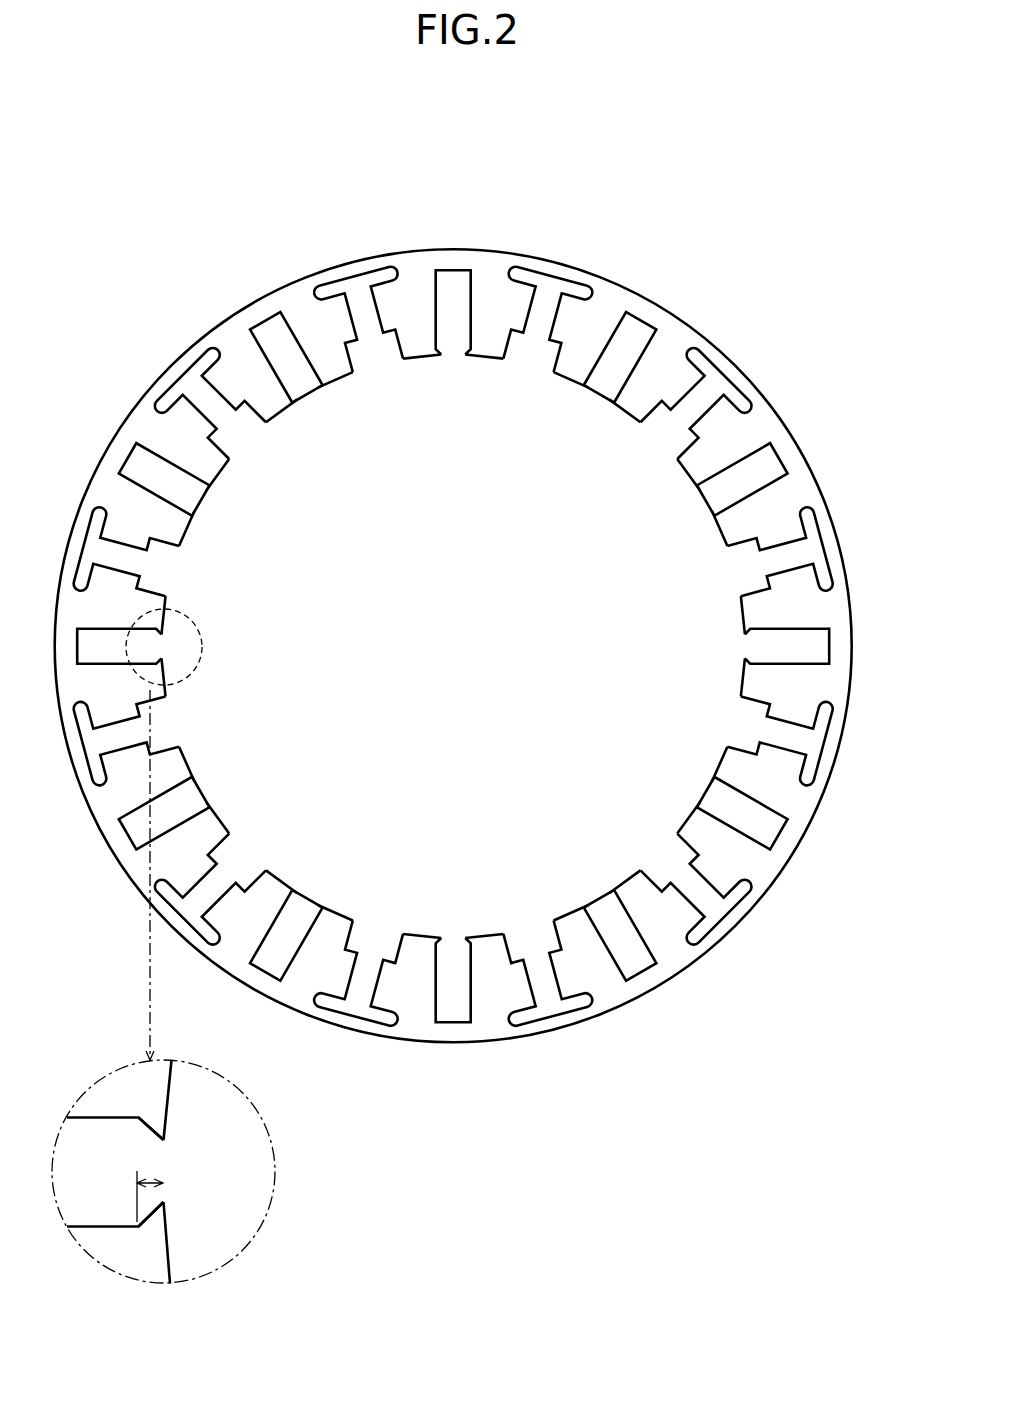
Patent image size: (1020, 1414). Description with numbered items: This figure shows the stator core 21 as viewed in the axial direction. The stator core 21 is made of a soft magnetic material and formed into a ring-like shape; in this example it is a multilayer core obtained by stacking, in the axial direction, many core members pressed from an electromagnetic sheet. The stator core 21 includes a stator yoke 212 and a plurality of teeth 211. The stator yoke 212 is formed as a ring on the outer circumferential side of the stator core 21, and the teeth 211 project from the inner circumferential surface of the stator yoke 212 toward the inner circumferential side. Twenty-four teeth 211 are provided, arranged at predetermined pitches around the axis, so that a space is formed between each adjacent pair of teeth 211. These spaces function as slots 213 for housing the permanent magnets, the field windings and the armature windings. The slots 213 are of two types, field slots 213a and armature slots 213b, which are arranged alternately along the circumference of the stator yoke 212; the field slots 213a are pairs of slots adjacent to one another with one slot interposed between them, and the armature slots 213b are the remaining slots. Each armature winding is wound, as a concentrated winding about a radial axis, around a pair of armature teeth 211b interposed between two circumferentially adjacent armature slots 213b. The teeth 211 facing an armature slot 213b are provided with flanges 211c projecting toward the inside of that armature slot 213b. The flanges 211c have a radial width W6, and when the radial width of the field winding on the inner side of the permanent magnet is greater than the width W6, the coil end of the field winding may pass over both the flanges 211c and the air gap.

The stator core 21 is at (724, 104).
The teeth 211 is at (287, 407).
The armature teeth 211b is at (138, 1097).
The flanges 211c is at (164, 1222).
The stator yoke 212 is at (418, 268).
The slots 213 is at (443, 761).
The field slots 213a is at (363, 302).
The armature slots 213b is at (458, 294).
The radial width of the flanges W6 is at (148, 1182).